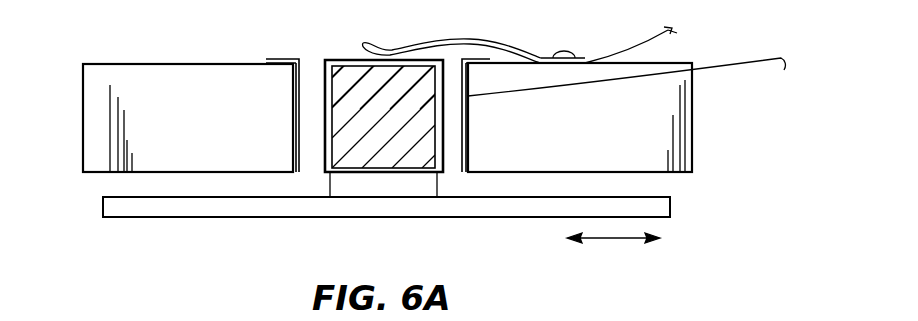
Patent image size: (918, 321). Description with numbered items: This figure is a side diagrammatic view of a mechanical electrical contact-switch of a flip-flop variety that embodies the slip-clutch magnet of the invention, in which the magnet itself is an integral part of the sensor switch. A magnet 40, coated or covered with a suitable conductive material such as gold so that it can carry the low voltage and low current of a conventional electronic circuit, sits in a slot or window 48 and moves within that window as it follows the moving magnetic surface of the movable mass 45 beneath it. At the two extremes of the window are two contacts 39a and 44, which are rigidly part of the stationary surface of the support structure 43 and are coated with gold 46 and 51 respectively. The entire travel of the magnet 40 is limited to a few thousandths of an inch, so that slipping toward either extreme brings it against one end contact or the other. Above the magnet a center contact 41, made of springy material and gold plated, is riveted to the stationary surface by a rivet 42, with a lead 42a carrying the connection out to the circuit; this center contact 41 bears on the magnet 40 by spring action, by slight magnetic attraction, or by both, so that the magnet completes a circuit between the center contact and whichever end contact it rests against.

The contact 39a is at (241, 6).
The slot or window 48 is at (327, 125).
The magnet 40 is at (378, 160).
The center contact 41 is at (478, 42).
The rivet 42 is at (567, 52).
The lead 42a is at (632, 40).
The support structure 43 is at (693, 117).
The contact 44 is at (738, 33).
The movable mass 45 is at (146, 217).
The gold coating 46 is at (316, 163).
The gold coating 51 is at (470, 161).